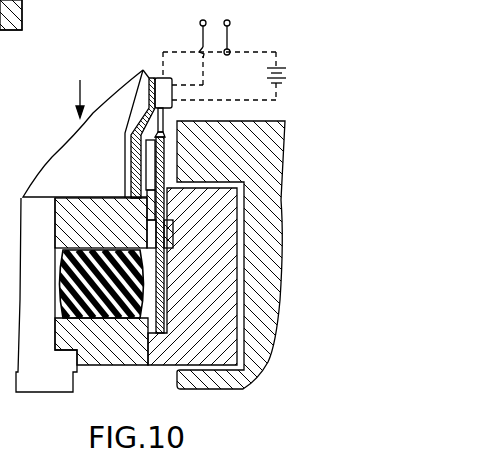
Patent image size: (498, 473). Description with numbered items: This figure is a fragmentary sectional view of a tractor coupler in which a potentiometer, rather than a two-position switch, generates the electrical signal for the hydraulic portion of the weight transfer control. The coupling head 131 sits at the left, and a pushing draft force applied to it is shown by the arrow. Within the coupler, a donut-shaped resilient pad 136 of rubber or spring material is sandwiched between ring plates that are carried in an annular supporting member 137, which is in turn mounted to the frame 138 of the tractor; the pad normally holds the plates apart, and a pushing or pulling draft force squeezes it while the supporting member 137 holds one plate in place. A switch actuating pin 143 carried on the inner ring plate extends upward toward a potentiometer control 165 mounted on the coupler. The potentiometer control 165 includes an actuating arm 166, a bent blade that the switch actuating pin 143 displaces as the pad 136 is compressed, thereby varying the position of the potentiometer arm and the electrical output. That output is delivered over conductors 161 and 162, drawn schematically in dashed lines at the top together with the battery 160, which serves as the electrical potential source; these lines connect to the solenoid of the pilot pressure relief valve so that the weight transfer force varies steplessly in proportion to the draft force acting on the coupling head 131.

The coupling head 131 is at (52, 157).
The donut-shaped resilient pad 136 is at (110, 307).
The annular supporting member 137 is at (212, 304).
The frame 138 is at (271, 193).
The switch actuating pin 143 is at (162, 164).
The battery 160 is at (283, 64).
The conductor 161 is at (202, 42).
The conductor 162 is at (231, 36).
The potentiometer control 165 is at (165, 93).
The actuating arm 166 is at (155, 115).